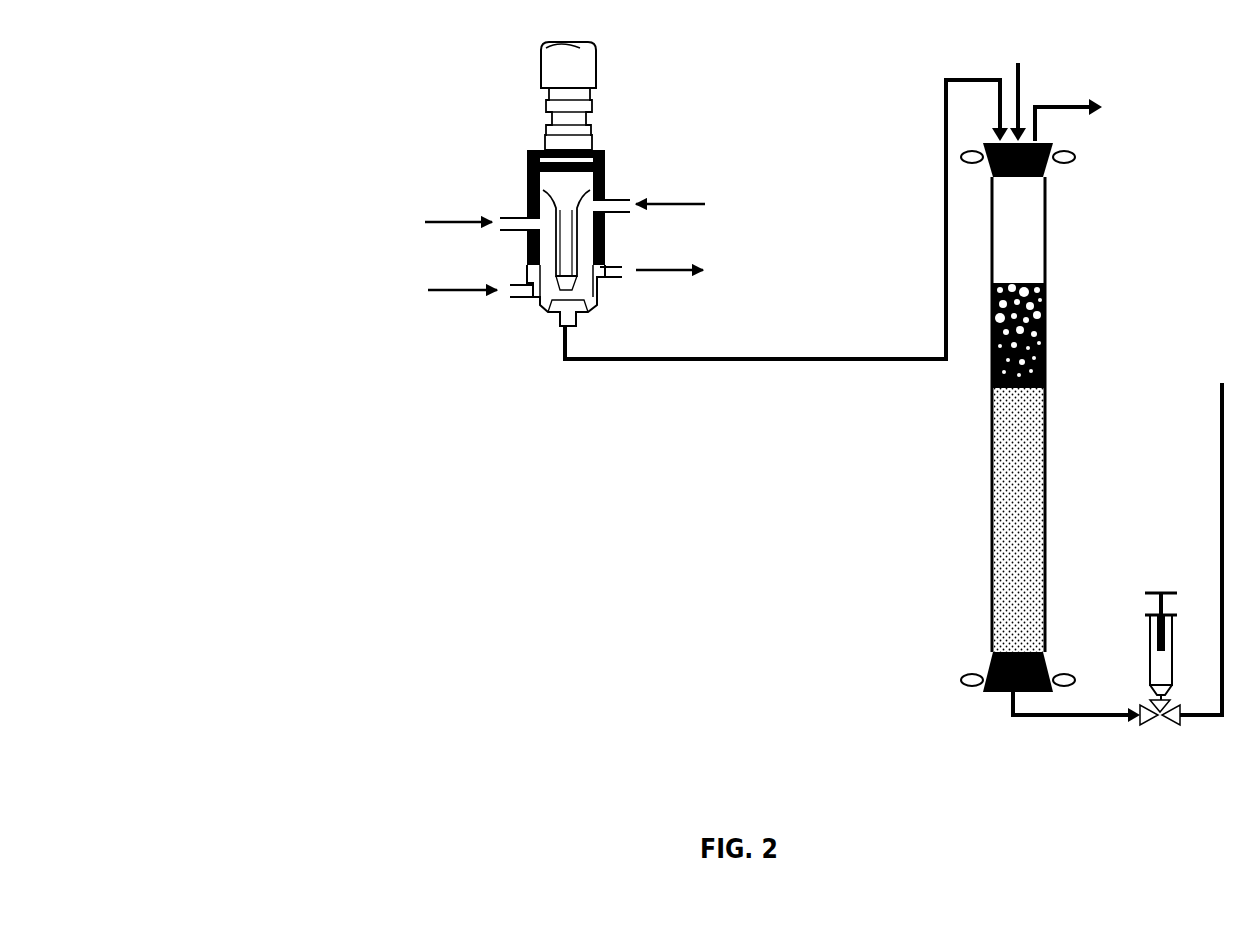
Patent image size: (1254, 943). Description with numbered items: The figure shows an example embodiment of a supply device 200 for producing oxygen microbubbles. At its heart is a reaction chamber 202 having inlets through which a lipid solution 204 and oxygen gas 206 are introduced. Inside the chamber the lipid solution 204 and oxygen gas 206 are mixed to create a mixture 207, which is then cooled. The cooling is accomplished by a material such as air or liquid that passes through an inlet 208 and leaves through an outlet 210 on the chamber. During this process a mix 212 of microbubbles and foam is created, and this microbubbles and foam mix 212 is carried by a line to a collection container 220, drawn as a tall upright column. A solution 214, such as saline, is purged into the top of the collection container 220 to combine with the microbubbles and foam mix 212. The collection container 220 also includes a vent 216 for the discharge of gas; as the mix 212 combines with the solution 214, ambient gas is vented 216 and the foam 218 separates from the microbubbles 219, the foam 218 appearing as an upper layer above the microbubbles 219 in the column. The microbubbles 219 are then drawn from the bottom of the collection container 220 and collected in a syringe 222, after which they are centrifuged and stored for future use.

The supply device 200 is at (466, 597).
The reaction chamber 202 is at (515, 152).
The lipid solution 204 is at (364, 199).
The oxygen gas 206 is at (746, 184).
The mixture 207 is at (558, 279).
The inlet 208 is at (369, 283).
The outlet 210 is at (748, 260).
The mix of microbubbles and foam 212 is at (786, 241).
The solution 214 is at (1057, 73).
The vent 216 is at (1109, 102).
The foam 218 is at (1096, 335).
The microbubbles 219 is at (1025, 427).
The collection container 220 is at (955, 555).
The syringe 222 is at (1140, 554).